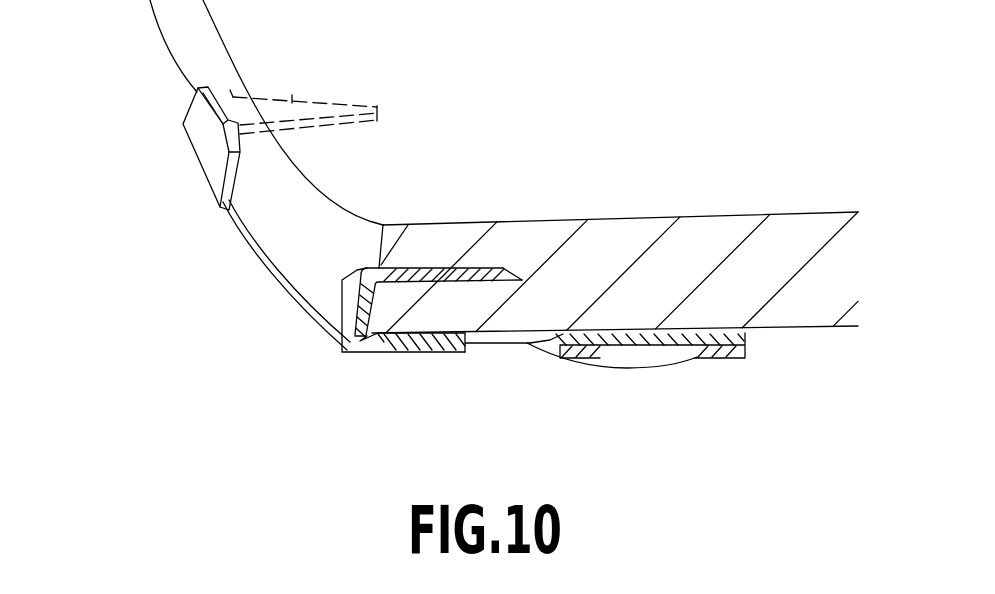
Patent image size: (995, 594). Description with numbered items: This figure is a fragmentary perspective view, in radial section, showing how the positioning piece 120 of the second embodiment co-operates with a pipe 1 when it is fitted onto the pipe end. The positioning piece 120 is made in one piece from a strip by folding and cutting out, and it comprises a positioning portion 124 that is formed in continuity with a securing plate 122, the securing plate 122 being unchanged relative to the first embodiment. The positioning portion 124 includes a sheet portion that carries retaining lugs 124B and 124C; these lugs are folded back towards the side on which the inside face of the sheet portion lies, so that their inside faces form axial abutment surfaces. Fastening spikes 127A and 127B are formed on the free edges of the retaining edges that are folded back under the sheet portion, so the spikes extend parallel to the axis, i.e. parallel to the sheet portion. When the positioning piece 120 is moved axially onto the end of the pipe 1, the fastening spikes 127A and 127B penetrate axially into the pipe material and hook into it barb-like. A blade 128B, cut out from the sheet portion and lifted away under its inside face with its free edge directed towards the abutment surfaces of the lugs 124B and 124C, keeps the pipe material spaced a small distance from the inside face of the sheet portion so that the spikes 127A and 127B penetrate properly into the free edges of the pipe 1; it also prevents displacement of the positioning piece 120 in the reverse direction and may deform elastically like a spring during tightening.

The pipe 1 is at (169, 47).
The positioning piece 120 is at (277, 307).
The securing plate 122 is at (712, 358).
The positioning portion 124 is at (253, 255).
The retaining lug 124B is at (210, 160).
The retaining lug 124C is at (339, 343).
The fastening spike 127A is at (293, 100).
The fastening spike 127B is at (438, 266).
The blade 128B is at (405, 353).